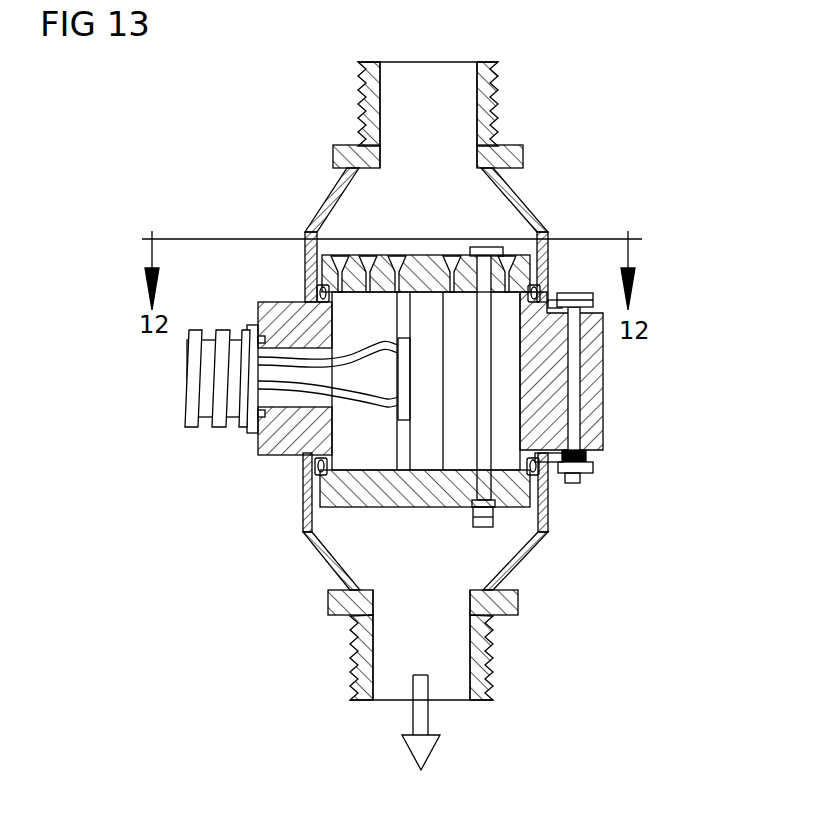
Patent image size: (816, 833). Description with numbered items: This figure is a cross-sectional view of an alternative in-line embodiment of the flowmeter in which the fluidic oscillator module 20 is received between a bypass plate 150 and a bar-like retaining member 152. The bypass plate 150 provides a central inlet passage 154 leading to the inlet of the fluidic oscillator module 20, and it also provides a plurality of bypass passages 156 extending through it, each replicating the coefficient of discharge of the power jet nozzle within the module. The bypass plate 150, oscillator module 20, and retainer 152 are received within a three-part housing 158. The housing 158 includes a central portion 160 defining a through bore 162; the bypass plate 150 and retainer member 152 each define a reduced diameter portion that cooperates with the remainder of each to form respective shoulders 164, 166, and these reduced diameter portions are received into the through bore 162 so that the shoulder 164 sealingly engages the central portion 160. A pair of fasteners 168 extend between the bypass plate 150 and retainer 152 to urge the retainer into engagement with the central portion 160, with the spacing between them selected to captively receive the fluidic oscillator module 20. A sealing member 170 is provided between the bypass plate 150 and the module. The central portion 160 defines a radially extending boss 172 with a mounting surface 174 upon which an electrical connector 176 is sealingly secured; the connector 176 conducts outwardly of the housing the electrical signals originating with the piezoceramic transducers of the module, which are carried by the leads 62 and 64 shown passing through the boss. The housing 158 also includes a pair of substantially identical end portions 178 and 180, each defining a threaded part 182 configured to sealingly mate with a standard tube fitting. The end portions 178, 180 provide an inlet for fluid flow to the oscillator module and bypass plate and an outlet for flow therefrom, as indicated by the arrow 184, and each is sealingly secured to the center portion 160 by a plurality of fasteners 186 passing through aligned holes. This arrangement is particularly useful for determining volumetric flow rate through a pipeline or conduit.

The fluidic oscillator module 20 is at (458, 360).
The upper lead wire 62 is at (383, 318).
The lower lead wire 64 is at (383, 410).
The bypass plate 150 is at (542, 236).
The retaining member 152 is at (347, 503).
The central inlet passage 154 is at (433, 255).
The funnel openings 156 is at (398, 255).
The housing 158 is at (562, 126).
The central portion 160 is at (593, 367).
The through bore 162 is at (522, 405).
The shoulder 164 is at (552, 268).
The shoulder 166 is at (545, 485).
The fasteners 168 is at (466, 513).
The sealing member 170 is at (444, 255).
The radially extending boss 172 is at (295, 457).
The mounting surface 174 is at (258, 310).
The electrical connector 176 is at (193, 408).
The end portion 178 is at (521, 199).
The end portion 180 is at (527, 567).
The threaded part 182 is at (488, 66).
The arrow 184 is at (420, 755).
The fasteners 186 is at (590, 470).